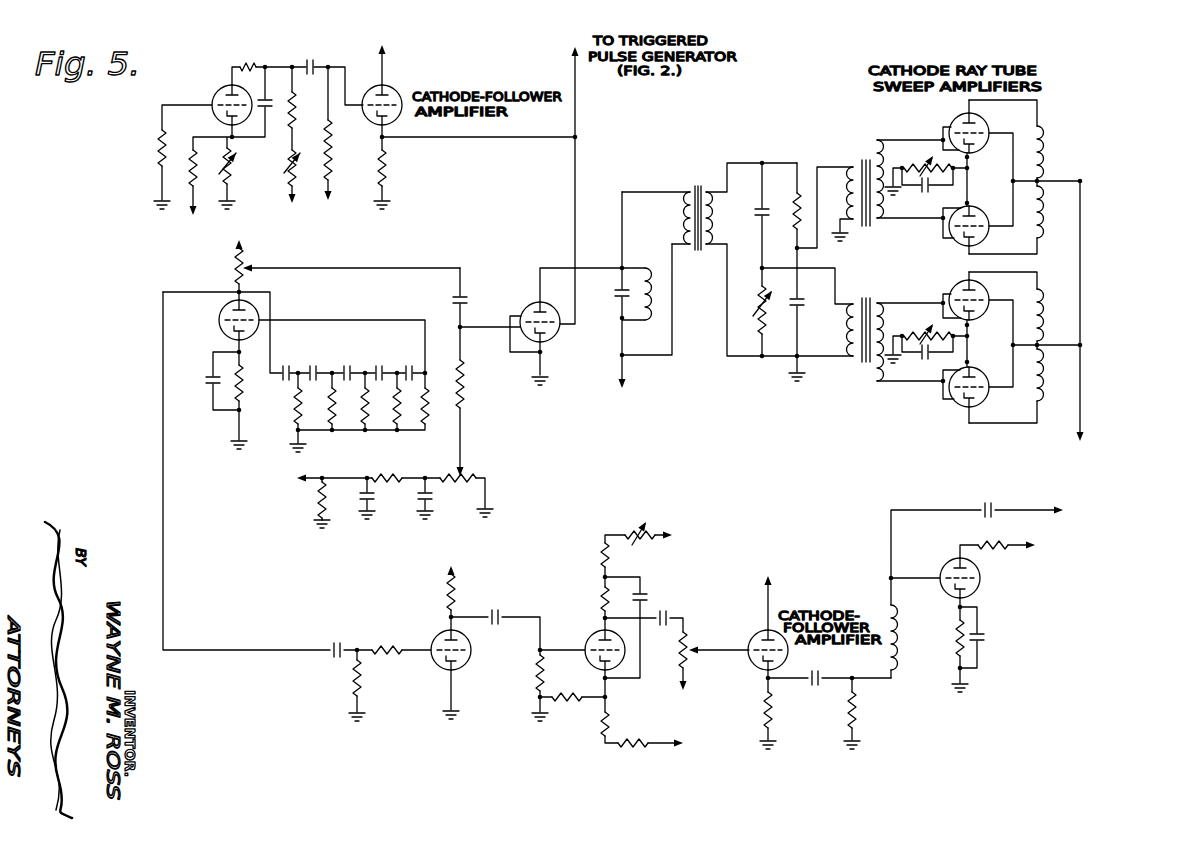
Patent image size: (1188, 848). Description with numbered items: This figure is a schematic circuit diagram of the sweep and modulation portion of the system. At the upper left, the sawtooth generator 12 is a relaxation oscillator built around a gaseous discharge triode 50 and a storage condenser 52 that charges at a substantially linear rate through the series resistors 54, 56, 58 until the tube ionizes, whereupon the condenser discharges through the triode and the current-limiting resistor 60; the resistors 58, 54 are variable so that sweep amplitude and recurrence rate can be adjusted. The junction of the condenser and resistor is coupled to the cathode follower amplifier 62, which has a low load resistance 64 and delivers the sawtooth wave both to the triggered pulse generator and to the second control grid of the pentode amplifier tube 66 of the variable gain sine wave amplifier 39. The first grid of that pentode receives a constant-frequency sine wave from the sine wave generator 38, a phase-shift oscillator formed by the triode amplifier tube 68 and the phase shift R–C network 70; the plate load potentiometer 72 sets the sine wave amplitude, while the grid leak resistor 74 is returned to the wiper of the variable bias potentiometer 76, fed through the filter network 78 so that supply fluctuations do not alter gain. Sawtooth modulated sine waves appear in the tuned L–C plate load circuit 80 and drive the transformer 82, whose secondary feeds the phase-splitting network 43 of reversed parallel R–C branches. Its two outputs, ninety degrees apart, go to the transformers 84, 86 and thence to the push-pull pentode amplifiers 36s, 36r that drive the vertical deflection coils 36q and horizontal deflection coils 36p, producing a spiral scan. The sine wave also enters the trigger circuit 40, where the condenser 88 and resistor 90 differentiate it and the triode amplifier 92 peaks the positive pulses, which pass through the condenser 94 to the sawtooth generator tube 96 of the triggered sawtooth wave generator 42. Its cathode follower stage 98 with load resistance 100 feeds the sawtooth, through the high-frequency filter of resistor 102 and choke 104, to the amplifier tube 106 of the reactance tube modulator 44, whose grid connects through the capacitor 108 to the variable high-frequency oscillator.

The sawtooth generator 12 is at (189, 137).
The gaseous discharge triode 50 is at (213, 90).
The storage condenser 52 is at (272, 110).
The series resistor 54 is at (292, 168).
The series resistor 56 is at (291, 118).
The series resistor 58 is at (230, 176).
The current-limiting resistor 60 is at (251, 66).
The amplifier 62 is at (393, 87).
The load resistance 64 is at (384, 165).
The pentode amplifier tube 66 is at (528, 304).
The triode amplifier tube 68 is at (219, 331).
The phase shift R–C network 70 is at (330, 363).
The potentiometer 72 is at (235, 268).
The grid leak resistor 74 is at (468, 386).
The variable bias potentiometer 76 is at (466, 476).
The filter network 78 is at (387, 475).
The tuned L–C plate load circuit 80 is at (640, 256).
The transformer 82 is at (698, 190).
The transformer 84 is at (863, 223).
The transformer 86 is at (862, 362).
The condenser 88 is at (342, 645).
The resistor 90 is at (359, 676).
The triode amplifier 92 is at (468, 664).
The condenser 94 is at (495, 612).
The sawtooth generator tube 96 is at (598, 632).
The cathode follower stage 98 is at (757, 628).
The load resistance 100 is at (770, 708).
The resistor 102 is at (855, 710).
The choke 104 is at (899, 637).
The amplifier tube 106 is at (945, 562).
The capacitor 108 is at (986, 505).
The push-pull pentode amplifiers 36s is at (999, 185).
The push-pull pentode amplifiers 36r is at (997, 354).
The vertical deflection coils 36q is at (1047, 160).
The horizontal deflection coils 36p is at (1045, 309).
The sine wave generator 38 is at (340, 383).
The variable gain sine wave amplifier 39 is at (566, 301).
The trigger circuit 40 is at (454, 650).
The triggered sawtooth wave generator 42 is at (644, 654).
The phase-splitting network 43 is at (789, 143).
The reactance tube modulator 44 is at (1026, 598).